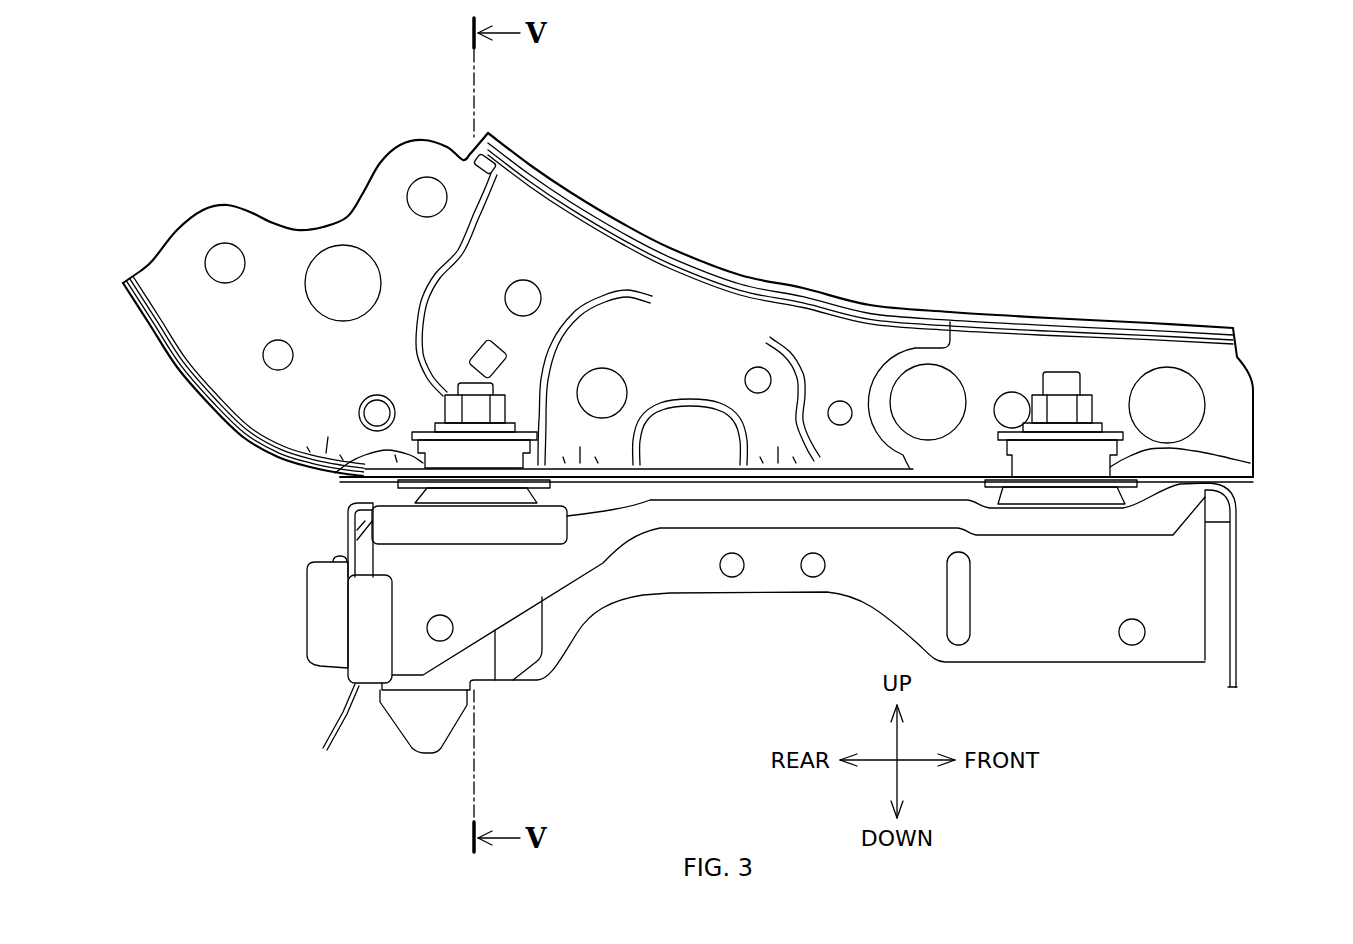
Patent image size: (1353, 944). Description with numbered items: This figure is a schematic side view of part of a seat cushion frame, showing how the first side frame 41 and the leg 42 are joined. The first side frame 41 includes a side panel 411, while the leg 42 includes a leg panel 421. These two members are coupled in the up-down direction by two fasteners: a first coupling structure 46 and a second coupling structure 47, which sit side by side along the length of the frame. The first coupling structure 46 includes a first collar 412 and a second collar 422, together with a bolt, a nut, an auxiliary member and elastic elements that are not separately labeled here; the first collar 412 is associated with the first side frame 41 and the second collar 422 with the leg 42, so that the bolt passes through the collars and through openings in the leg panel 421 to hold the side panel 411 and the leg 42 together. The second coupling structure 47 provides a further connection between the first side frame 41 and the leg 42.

The first side frame 41 is at (1021, 309).
The side panel 411 is at (1232, 402).
The first collar 412 is at (343, 473).
The leg 42 is at (793, 623).
The leg panel 421 is at (1187, 598).
The second collar 422 is at (413, 505).
The first coupling structure 46 is at (428, 406).
The second coupling structure 47 is at (1088, 358).